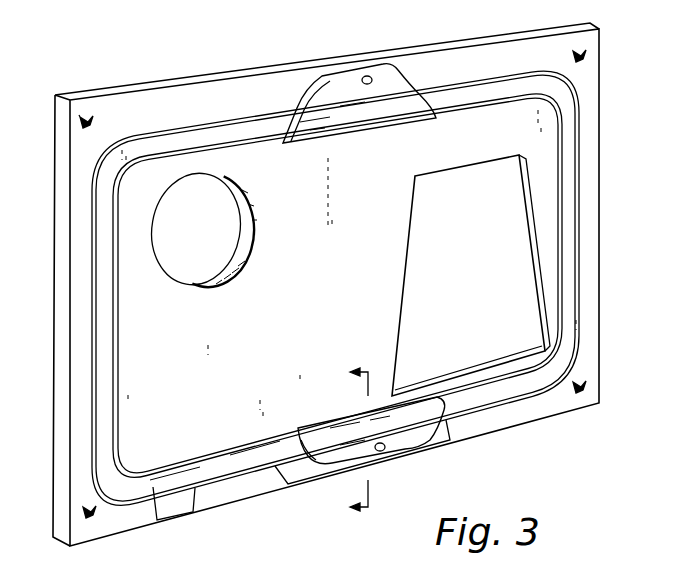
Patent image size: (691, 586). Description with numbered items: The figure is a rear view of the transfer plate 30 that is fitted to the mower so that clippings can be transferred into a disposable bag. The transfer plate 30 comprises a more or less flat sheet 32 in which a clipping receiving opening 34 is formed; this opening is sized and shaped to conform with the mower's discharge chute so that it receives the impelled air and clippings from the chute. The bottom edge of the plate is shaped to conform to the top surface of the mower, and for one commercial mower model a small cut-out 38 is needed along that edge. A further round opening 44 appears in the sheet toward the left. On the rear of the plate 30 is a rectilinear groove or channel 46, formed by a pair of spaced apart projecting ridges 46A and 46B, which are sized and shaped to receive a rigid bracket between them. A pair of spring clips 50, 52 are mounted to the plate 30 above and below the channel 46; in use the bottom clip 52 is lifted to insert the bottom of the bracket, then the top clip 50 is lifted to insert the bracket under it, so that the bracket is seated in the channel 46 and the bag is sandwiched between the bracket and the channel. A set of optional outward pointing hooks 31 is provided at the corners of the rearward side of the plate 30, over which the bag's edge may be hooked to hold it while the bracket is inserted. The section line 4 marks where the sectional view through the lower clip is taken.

The transfer plate 30 is at (599, 233).
The outward pointing hooks 31 is at (88, 116).
The flat sheet 32 is at (590, 112).
The clipping receiving opening 34 is at (474, 277).
The cut-out 38 is at (239, 479).
The circular opening 44 is at (209, 233).
The rectilinear groove or channel 46 is at (147, 482).
The projecting ridge 46A is at (249, 448).
The projecting ridge 46B is at (183, 483).
The spring clip 50 is at (382, 82).
The spring clip 52 is at (398, 445).
The section line 4- 4 is at (348, 439).